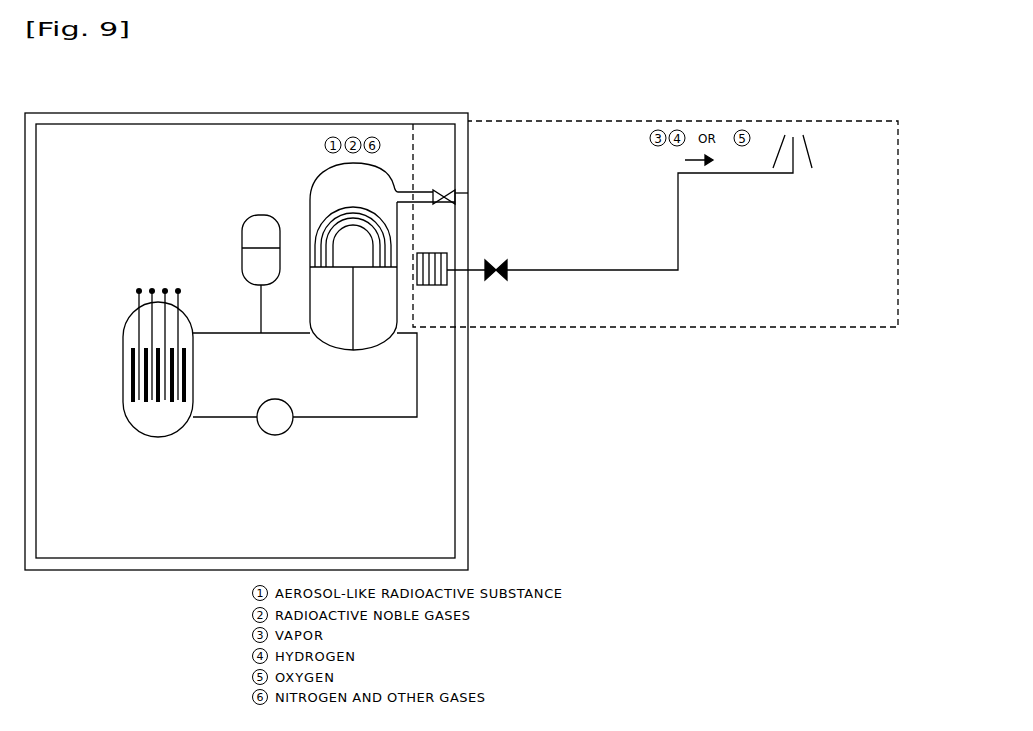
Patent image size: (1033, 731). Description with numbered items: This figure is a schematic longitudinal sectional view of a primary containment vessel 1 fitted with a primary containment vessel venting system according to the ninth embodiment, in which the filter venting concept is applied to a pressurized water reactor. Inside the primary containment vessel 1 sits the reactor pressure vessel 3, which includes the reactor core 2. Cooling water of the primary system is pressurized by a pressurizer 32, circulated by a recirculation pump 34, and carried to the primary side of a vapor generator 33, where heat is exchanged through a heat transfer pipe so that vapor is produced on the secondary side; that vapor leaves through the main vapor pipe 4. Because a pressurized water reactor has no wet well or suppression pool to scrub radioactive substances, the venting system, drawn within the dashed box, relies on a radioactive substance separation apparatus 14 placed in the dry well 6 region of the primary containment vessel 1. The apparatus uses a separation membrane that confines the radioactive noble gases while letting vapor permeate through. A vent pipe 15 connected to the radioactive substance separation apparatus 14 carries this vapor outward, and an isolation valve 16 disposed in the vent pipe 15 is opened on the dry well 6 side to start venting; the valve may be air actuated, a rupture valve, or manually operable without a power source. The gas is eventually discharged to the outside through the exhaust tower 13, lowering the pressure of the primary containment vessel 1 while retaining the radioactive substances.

The primary containment vessel 1 is at (203, 113).
The reactor core 2 is at (131, 378).
The reactor pressure vessel 3 is at (138, 432).
The main vapor pipe 4 is at (432, 191).
The dry well 6 is at (450, 374).
The exhaust tower 13 is at (810, 150).
The radioactive substance separation apparatus 14 is at (447, 253).
The vent pipe 15 is at (575, 268).
The isolation valve 16 is at (498, 278).
The pressurizer 32 is at (242, 238).
The vapor generator 33 is at (310, 212).
The recirculation pump 34 is at (290, 428).